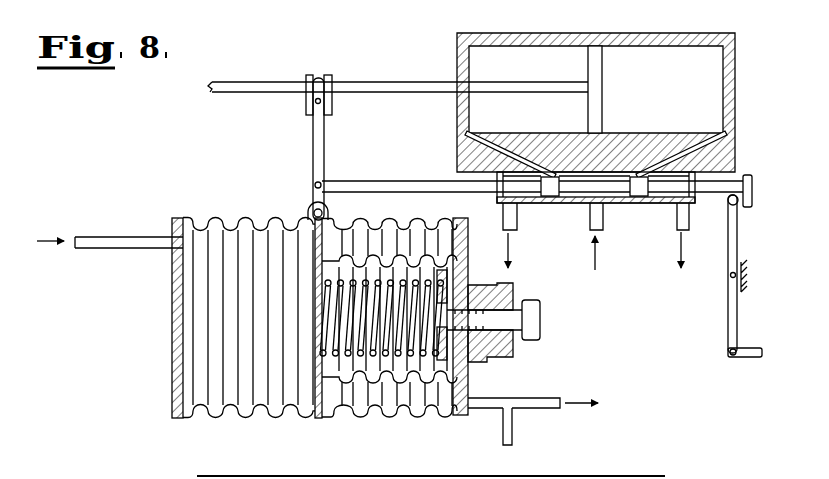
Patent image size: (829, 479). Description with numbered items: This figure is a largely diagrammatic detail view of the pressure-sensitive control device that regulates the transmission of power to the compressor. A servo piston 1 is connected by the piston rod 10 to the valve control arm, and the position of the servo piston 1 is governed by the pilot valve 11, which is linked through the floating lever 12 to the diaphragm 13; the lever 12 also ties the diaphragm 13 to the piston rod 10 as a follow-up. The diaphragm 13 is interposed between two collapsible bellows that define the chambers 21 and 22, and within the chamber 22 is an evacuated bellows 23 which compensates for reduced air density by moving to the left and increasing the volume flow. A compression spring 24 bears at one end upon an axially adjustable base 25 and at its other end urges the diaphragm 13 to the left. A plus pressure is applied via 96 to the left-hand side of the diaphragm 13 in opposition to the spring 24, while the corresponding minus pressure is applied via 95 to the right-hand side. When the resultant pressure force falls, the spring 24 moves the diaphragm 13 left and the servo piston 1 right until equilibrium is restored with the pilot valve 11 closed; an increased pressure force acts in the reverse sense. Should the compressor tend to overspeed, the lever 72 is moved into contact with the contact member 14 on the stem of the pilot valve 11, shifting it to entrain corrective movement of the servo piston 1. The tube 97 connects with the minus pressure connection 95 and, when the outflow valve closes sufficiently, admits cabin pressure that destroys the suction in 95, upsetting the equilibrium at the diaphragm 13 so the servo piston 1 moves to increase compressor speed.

The servo piston 1 is at (593, 58).
The piston rod 10 is at (360, 86).
The pilot valve 11 is at (637, 193).
The floating lever 12 is at (317, 143).
The diaphragm 13 is at (319, 412).
The contact member 14 is at (752, 185).
The chamber 21 is at (206, 393).
The chamber 22 is at (423, 410).
The evacuated bellows 23 is at (351, 408).
The compression spring 24 is at (373, 417).
The axially adjustable base 25 is at (448, 282).
The lever 72 is at (730, 252).
The minus pressure connection 95 is at (534, 399).
The plus pressure connection 96 is at (97, 233).
The tube 97 is at (513, 437).